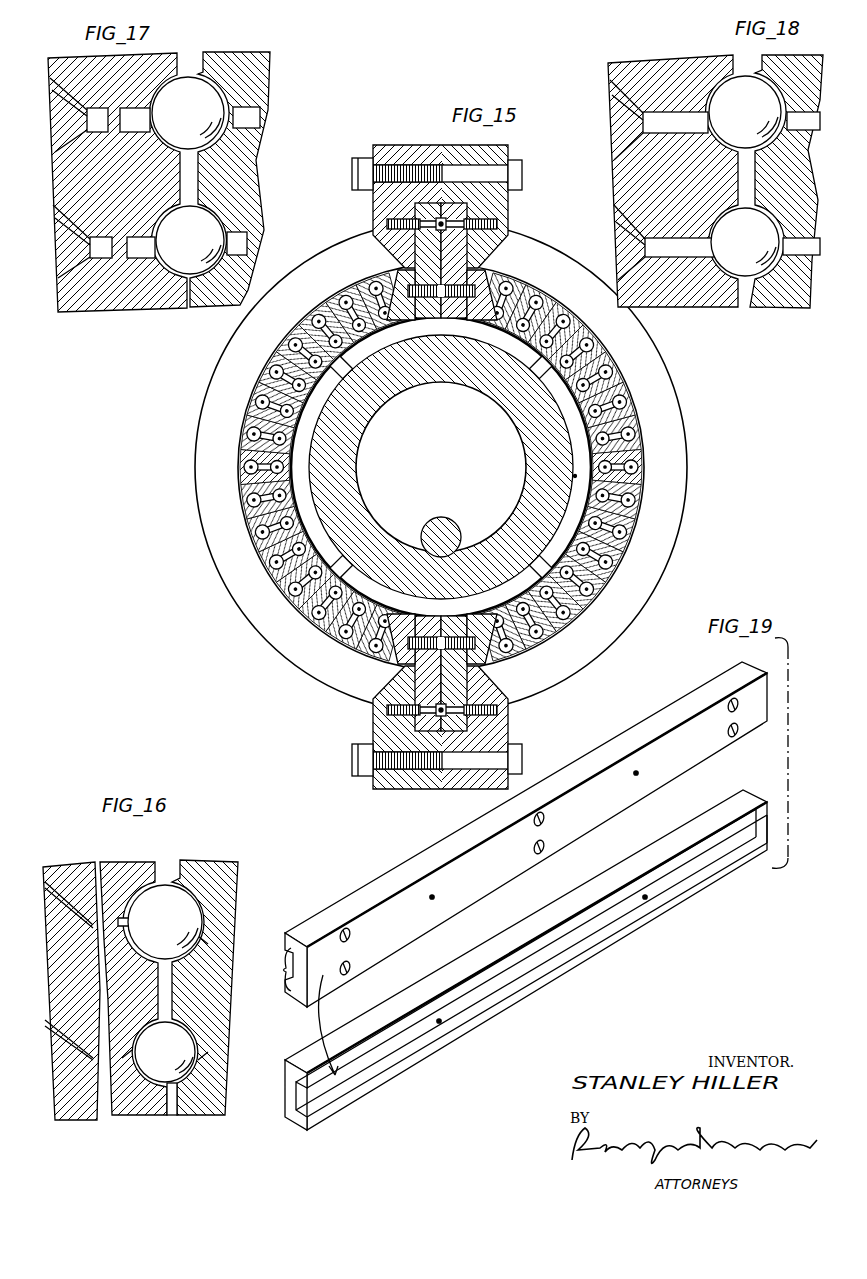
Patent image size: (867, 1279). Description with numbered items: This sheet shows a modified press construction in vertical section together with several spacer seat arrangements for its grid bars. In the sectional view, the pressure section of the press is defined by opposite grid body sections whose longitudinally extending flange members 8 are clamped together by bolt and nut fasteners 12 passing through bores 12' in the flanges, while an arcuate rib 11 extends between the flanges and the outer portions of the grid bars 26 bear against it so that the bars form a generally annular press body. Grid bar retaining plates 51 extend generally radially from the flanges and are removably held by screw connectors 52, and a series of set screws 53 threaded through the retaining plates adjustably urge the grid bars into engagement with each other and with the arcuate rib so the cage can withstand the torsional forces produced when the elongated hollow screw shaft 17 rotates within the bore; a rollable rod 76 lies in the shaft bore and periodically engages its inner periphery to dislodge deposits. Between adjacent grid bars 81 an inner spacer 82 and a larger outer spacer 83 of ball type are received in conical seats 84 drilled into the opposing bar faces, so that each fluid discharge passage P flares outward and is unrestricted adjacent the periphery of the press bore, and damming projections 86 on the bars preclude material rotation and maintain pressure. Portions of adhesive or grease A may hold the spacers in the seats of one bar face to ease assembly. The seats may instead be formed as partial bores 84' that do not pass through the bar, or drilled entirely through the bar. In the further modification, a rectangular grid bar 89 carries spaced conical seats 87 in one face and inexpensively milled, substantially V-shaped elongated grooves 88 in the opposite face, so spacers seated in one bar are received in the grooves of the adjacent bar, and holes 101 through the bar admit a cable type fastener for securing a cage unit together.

In FIG. 15, the flange member 8 is at (457, 152).
In FIG. 15, the arcuate rib 11 is at (203, 518).
In FIG. 15, the bolt and nut fastener 12 is at (466, 487).
In FIG. 15, the bore 12' is at (377, 467).
In FIG. 15, the screw shaft 17 is at (357, 462).
In FIG. 15, the grid bar 26 is at (577, 360).
In FIG. 15, the grid bar retaining plate 51 is at (427, 245).
In FIG. 15, the screw connector 52 is at (393, 221).
In FIG. 15, the set screw 53 is at (402, 287).
In FIG. 15, the rollable member 76 is at (436, 522).
In FIG. 15, the grid bar 81 is at (638, 447).
In FIG. 16, the grid bar 81 is at (127, 868).
In FIG. 15, the inner spacer 82 is at (588, 382).
In FIG. 17, the inner spacer 82 is at (177, 238).
In FIG. 18, the inner spacer 82 is at (735, 252).
In FIG. 16, the inner spacer 82 is at (153, 1048).
In FIG. 15, the outer spacer 83 is at (637, 500).
In FIG. 17, the outer spacer 83 is at (178, 109).
In FIG. 18, the outer spacer 83 is at (745, 78).
In FIG. 16, the outer spacer 83 is at (153, 918).
In FIG. 16, the conical seat 84 is at (165, 1014).
In FIG. 17, the partial bore 84' is at (155, 155).
In FIG. 15, the damming projection 86 is at (346, 372).
In FIG. 19, the conical seat 87 is at (351, 933).
In FIG. 19, the elongated groove 88 is at (284, 990).
In FIG. 19, the grid bar 89 is at (707, 695).
In FIG. 19, the hole 101 is at (636, 773).
In FIG. 15, the fluid discharge passage P is at (575, 476).
In FIG. 16, the adhesive or grease A is at (176, 1110).